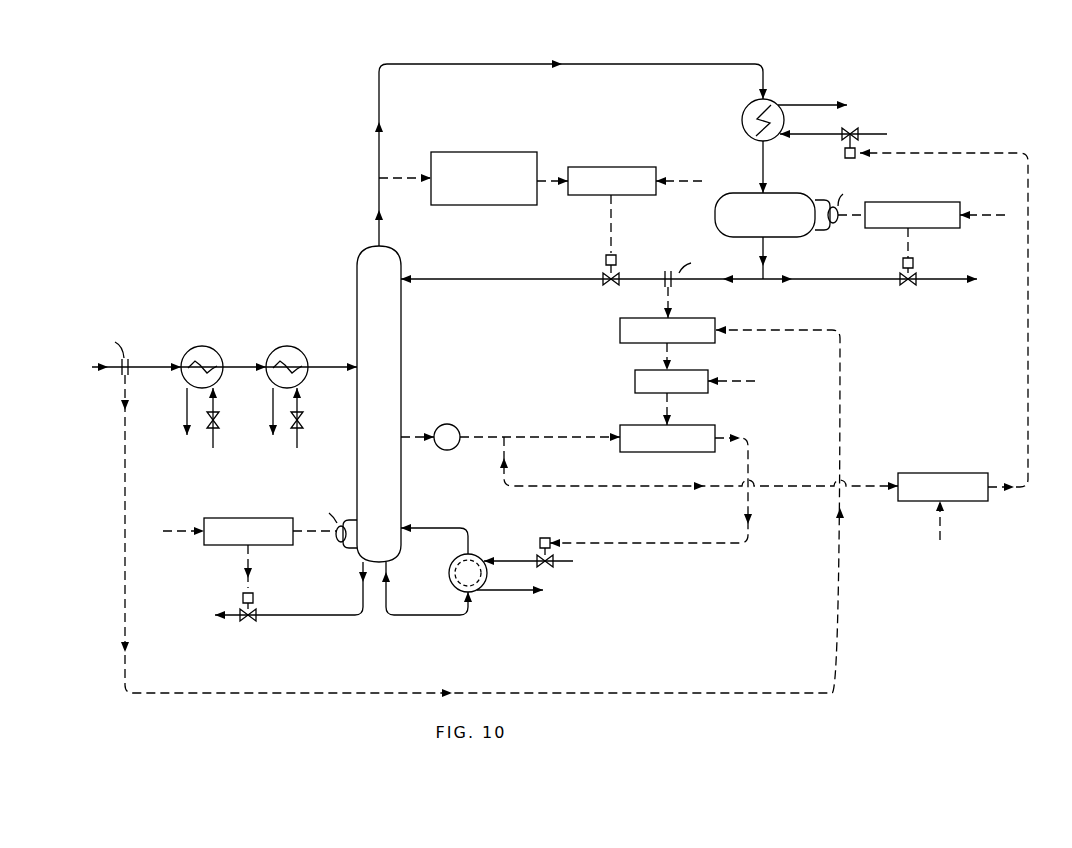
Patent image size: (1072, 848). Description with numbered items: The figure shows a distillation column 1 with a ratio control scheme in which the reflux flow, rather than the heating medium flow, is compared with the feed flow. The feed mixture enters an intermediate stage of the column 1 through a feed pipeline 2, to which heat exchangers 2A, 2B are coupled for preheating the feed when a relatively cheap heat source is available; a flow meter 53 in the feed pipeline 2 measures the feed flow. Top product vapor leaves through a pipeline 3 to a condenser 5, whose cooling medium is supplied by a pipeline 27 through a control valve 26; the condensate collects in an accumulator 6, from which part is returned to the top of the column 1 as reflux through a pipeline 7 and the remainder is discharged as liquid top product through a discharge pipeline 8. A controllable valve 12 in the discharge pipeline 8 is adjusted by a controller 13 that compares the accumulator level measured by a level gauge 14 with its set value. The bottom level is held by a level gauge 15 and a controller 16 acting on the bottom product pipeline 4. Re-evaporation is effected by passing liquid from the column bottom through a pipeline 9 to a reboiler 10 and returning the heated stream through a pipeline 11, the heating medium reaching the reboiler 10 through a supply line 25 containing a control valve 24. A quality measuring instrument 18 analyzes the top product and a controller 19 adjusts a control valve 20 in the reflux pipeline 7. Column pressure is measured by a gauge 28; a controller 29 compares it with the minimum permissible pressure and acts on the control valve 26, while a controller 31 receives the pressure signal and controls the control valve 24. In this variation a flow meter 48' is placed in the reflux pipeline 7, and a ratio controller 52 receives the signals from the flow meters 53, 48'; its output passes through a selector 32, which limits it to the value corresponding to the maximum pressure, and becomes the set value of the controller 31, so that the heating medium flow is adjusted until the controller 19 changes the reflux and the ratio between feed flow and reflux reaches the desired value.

The distillation column 1 is at (369, 403).
The feed pipeline 2 is at (318, 363).
The heat exchanger 2A is at (190, 351).
The heat exchanger 2B is at (280, 351).
The top product discharge pipeline 3 is at (445, 63).
The bottom product pipeline 4 is at (293, 613).
The condenser 5 is at (757, 103).
The accumulator 6 is at (781, 192).
The reflux pipeline 7 is at (449, 278).
The discharge pipeline 8 is at (938, 278).
The pipeline 9 is at (388, 595).
The reboiler 10 is at (454, 560).
The pipeline 11 is at (417, 527).
The controllable valve 12 is at (906, 289).
The controller 13 is at (930, 202).
The level gauge 14 is at (834, 224).
The level gauge 15 is at (338, 545).
The controller 16 is at (255, 518).
The quality measuring instrument 18 is at (505, 152).
The controller 19 is at (622, 167).
The control valve 20 is at (607, 286).
The control valve 24 is at (556, 566).
The heating medium supply line 25 is at (500, 560).
The control valve 26 is at (846, 140).
The pipeline 27 is at (803, 133).
The pressure gauge 28 is at (449, 450).
The controller 29 is at (949, 473).
The controller 31 is at (632, 425).
The selector 32 is at (635, 381).
The flow meter 48' is at (676, 283).
The ratio controller 52 is at (687, 318).
The flow meter 53 is at (130, 375).